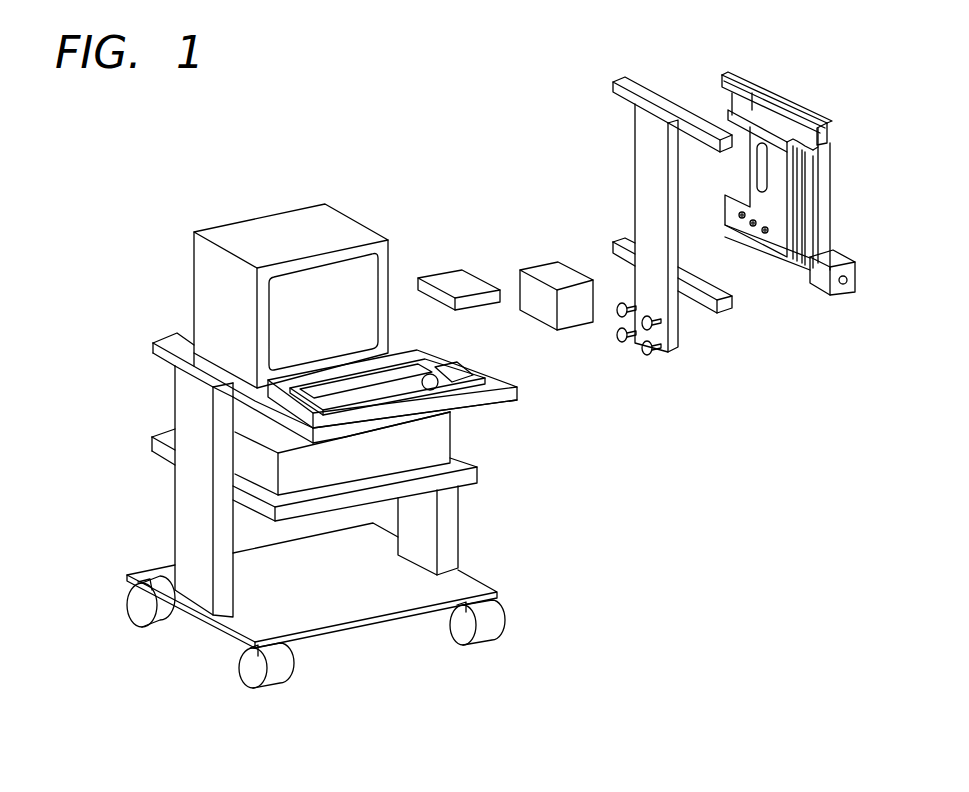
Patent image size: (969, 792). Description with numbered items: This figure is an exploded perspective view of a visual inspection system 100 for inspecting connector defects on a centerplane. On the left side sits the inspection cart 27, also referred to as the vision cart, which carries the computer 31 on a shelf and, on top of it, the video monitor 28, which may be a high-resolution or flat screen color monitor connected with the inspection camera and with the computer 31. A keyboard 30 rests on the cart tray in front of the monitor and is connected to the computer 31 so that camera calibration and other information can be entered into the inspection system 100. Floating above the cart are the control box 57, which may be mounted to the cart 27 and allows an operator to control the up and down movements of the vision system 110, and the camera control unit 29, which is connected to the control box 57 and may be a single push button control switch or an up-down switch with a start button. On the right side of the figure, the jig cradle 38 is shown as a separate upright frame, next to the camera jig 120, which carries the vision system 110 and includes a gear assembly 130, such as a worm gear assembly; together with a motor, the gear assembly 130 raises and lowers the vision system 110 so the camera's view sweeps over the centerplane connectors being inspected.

The visual inspection system 100 is at (416, 139).
The inspection cart 27 is at (447, 518).
The video monitor 28 is at (262, 232).
The camera control unit 29 is at (453, 280).
The keyboard 30 is at (438, 360).
The computer 31 is at (443, 432).
The control box 57 is at (552, 272).
The jig cradle 38 is at (677, 342).
The vision system 110 is at (722, 79).
The camera jig 120 is at (832, 176).
The gear assembly 130 is at (785, 262).